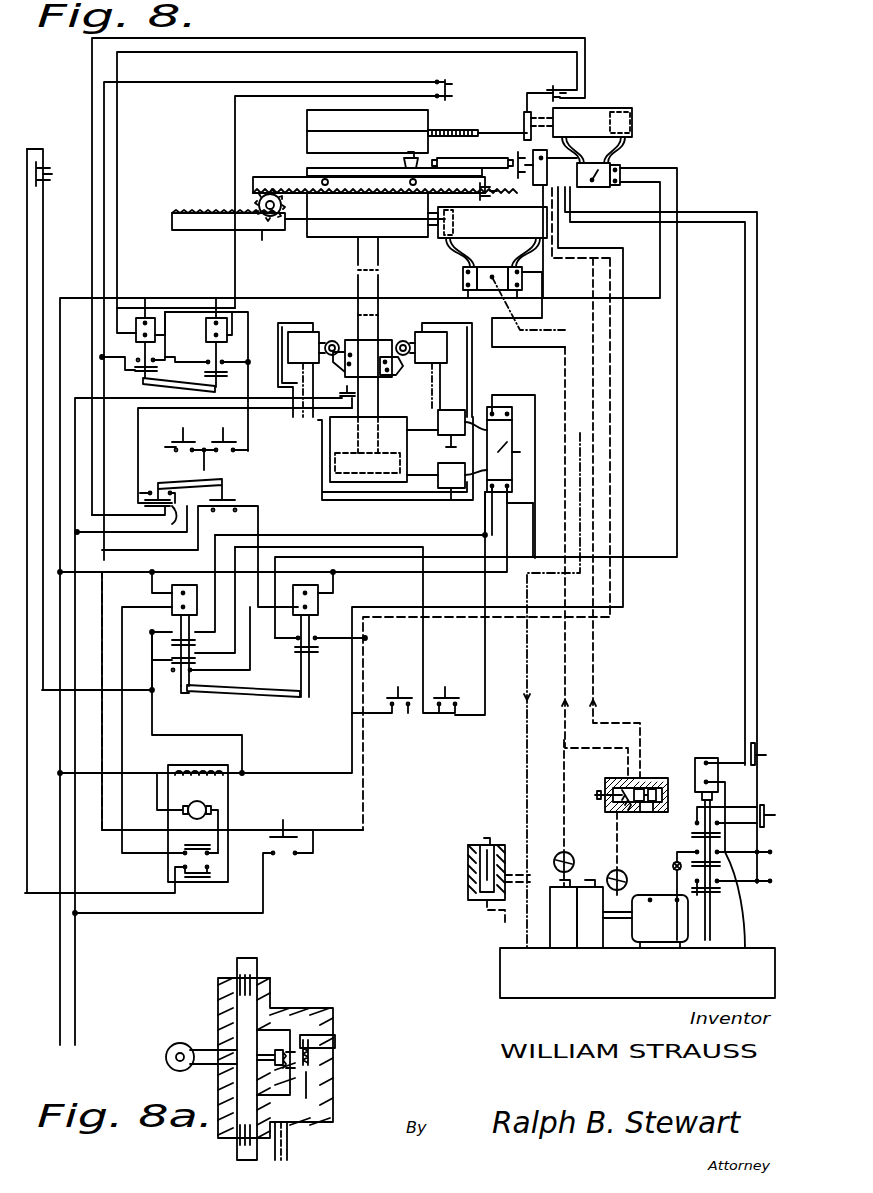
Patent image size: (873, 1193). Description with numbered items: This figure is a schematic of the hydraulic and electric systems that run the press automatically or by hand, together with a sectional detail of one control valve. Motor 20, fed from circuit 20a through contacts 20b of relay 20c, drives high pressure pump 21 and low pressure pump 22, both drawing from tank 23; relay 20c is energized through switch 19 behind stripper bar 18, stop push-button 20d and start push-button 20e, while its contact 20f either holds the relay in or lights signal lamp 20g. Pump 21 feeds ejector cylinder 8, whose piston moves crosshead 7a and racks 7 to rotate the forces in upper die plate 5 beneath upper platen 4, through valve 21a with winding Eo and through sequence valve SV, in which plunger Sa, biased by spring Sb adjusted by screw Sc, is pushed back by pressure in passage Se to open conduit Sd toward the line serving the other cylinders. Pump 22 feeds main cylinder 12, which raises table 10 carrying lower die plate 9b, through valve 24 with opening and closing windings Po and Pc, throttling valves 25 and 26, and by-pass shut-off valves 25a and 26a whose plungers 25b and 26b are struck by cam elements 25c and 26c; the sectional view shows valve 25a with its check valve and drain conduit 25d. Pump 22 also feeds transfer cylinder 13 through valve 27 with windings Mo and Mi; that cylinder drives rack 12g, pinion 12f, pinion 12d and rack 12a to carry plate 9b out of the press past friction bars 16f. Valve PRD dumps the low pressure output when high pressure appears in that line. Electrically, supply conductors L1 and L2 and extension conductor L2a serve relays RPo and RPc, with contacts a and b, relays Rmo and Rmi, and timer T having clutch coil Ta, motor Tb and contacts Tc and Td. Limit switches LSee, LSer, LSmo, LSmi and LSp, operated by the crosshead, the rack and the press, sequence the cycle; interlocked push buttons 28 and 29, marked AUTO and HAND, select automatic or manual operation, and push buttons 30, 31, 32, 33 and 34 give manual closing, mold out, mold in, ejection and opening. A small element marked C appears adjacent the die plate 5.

In FIG. 8, the upper platen 4 is at (307, 124).
In FIG. 8, the upper die plate 5 is at (307, 144).
In FIG. 8, the racks 7 is at (462, 132).
In FIG. 8, the crosshead 7a is at (524, 122).
In FIG. 8, the cylinder 8 is at (632, 124).
In FIG. 8, the lower die plate 9b is at (312, 168).
In FIG. 8, the table 10 is at (315, 237).
In FIG. 8, the pressure cylinder 12 is at (384, 449).
In FIG. 8, the rack 12a is at (278, 177).
In FIG. 8, the pinion 12d is at (258, 204).
In FIG. 8, the pinion 12f is at (261, 243).
In FIG. 8, the rack 12g is at (172, 226).
In FIG. 8, the pressure cylinder 13 is at (488, 222).
In FIG. 8, the friction bars 16f is at (472, 154).
In FIG. 8, the stripper bar 18 is at (516, 160).
In FIG. 8, the switch 19 is at (571, 224).
In FIG. 8, the electric motor 20 is at (660, 921).
In FIG. 8, the circuit 20a is at (772, 867).
In FIG. 8, the contacts 20b is at (724, 890).
In FIG. 8, the relay 20c is at (695, 760).
In FIG. 8, the stop push-button 20d is at (770, 745).
In FIG. 8, the start push-button 20e is at (766, 812).
In FIG. 8, the contact 20f is at (690, 834).
In FIG. 8, the signal lamp 20g is at (675, 862).
In FIG. 8, the high pressure pump 21 is at (604, 914).
In FIG. 8, the electrically controlled valve 21a is at (602, 187).
In FIG. 8, the low pressure pump 22 is at (563, 914).
In FIG. 8, the supply tank 23 is at (625, 998).
In FIG. 8, the electrically controlled valve 24 is at (487, 449).
In FIG. 8, the throttling valve 25 is at (451, 428).
In FIG. 8, the shut-off valve 25a is at (443, 370).
In FIG. 8A, the shut-off valve 25a is at (282, 1005).
In FIG. 8, the operating plunger 25b is at (402, 341).
In FIG. 8A, the operating plunger 25b is at (200, 1050).
In FIG. 8, the adjustable cam element 25c is at (402, 376).
In FIG. 8A, the adjustable cam element 25c is at (332, 1033).
In FIG. 8A, the conduit 25d is at (290, 1144).
In FIG. 8, the throttling valve 26 is at (451, 481).
In FIG. 8, the shut-off valve 26a is at (298, 370).
In FIG. 8, the operating plunger 26b is at (331, 341).
In FIG. 8, the adjustable cam element 26c is at (362, 358).
In FIG. 8, the valve 27 is at (489, 267).
In FIG. 8, the push button 28 is at (170, 514).
In FIG. 8, the push button 29 is at (224, 482).
In FIG. 8, the push button 30 is at (290, 825).
In FIG. 8, the push button 31 is at (245, 455).
In FIG. 8, the push button 32 is at (230, 432).
In FIG. 8, the push button 33 is at (396, 688).
In FIG. 8, the push button 34 is at (447, 688).
In FIG. 8, the limit switch LSer is at (452, 84).
In FIG. 8, the limit switch LSee is at (570, 92).
In FIG. 8, the limit switch LSmo is at (58, 167).
In FIG. 8, the limit switch LSmi is at (478, 197).
In FIG. 8, the limit switch LSp is at (342, 390).
In FIG. 8, the winding Eo is at (622, 165).
In FIG. 8, the clamp C is at (404, 158).
In FIG. 8, the winding Mi is at (463, 258).
In FIG. 8, the winding Mo is at (522, 267).
In FIG. 8, the relay Rmo is at (174, 366).
In FIG. 8, the relay Rmi is at (207, 334).
In FIG. 8, the supply conductor L1 is at (44, 1061).
In FIG. 8, the supply conductor L2 is at (74, 1061).
In FIG. 8, the extension conductor L2a is at (104, 250).
In FIG. 8, the automatic position AUTO is at (158, 466).
In FIG. 8, the hand position HAND is at (226, 466).
In FIG. 8, the closing winding Pc is at (493, 395).
In FIG. 8, the opening winding Po is at (515, 486).
In FIG. 8, the relay RPo is at (184, 635).
In FIG. 8, the relay RPc is at (321, 641).
In FIG. 8, the contact a is at (198, 642).
In FIG. 8, the contact b is at (168, 661).
In FIG. 8, the timer T is at (170, 765).
In FIG. 8, the clutch coil Ta is at (196, 770).
In FIG. 8, the timer motor Tb is at (206, 803).
In FIG. 8, the contact Tc is at (185, 845).
In FIG. 8, the contact Td is at (210, 878).
In FIG. 8, the sequence valve SV is at (668, 802).
In FIG. 8, the plunger valve Sa is at (650, 778).
In FIG. 8, the spring Sb is at (618, 810).
In FIG. 8, the screw Sc is at (598, 791).
In FIG. 8, the conduit Sd is at (612, 778).
In FIG. 8, the internal passage Se is at (648, 812).
In FIG. 8, the valve PRD is at (468, 893).